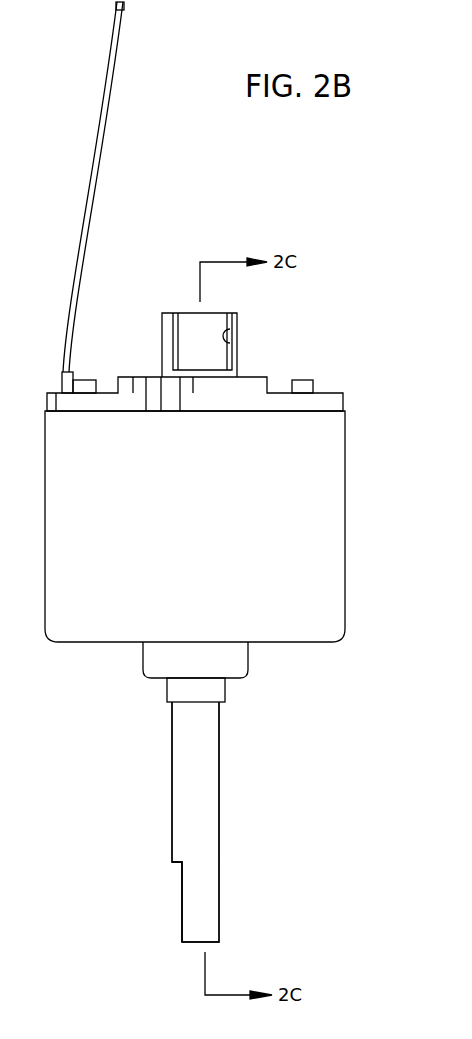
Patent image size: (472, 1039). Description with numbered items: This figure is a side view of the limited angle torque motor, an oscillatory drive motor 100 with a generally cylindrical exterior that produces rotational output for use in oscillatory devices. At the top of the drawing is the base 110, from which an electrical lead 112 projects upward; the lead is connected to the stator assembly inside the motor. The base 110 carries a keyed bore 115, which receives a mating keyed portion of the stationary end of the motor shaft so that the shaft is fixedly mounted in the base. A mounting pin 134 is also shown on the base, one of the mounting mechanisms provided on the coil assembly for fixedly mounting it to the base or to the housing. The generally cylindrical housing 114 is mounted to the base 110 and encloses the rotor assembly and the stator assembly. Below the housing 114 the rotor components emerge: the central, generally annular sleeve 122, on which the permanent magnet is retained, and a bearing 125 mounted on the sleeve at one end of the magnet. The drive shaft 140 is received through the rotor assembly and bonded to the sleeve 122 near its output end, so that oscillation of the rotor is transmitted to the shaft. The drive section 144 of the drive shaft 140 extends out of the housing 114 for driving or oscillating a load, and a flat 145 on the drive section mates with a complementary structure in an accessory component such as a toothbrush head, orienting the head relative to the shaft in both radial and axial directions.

The oscillatory drive motor 100 is at (317, 333).
The base 110 is at (337, 400).
The electrical lead 112 is at (108, 160).
The housing 114 is at (286, 528).
The keyed bore 115 is at (235, 337).
The sleeve 122 is at (167, 695).
The bearing 125 is at (160, 658).
The mounting pin 134 is at (313, 383).
The drive shaft 140 is at (223, 758).
The drive section 144 is at (220, 838).
The flat 145 is at (182, 905).